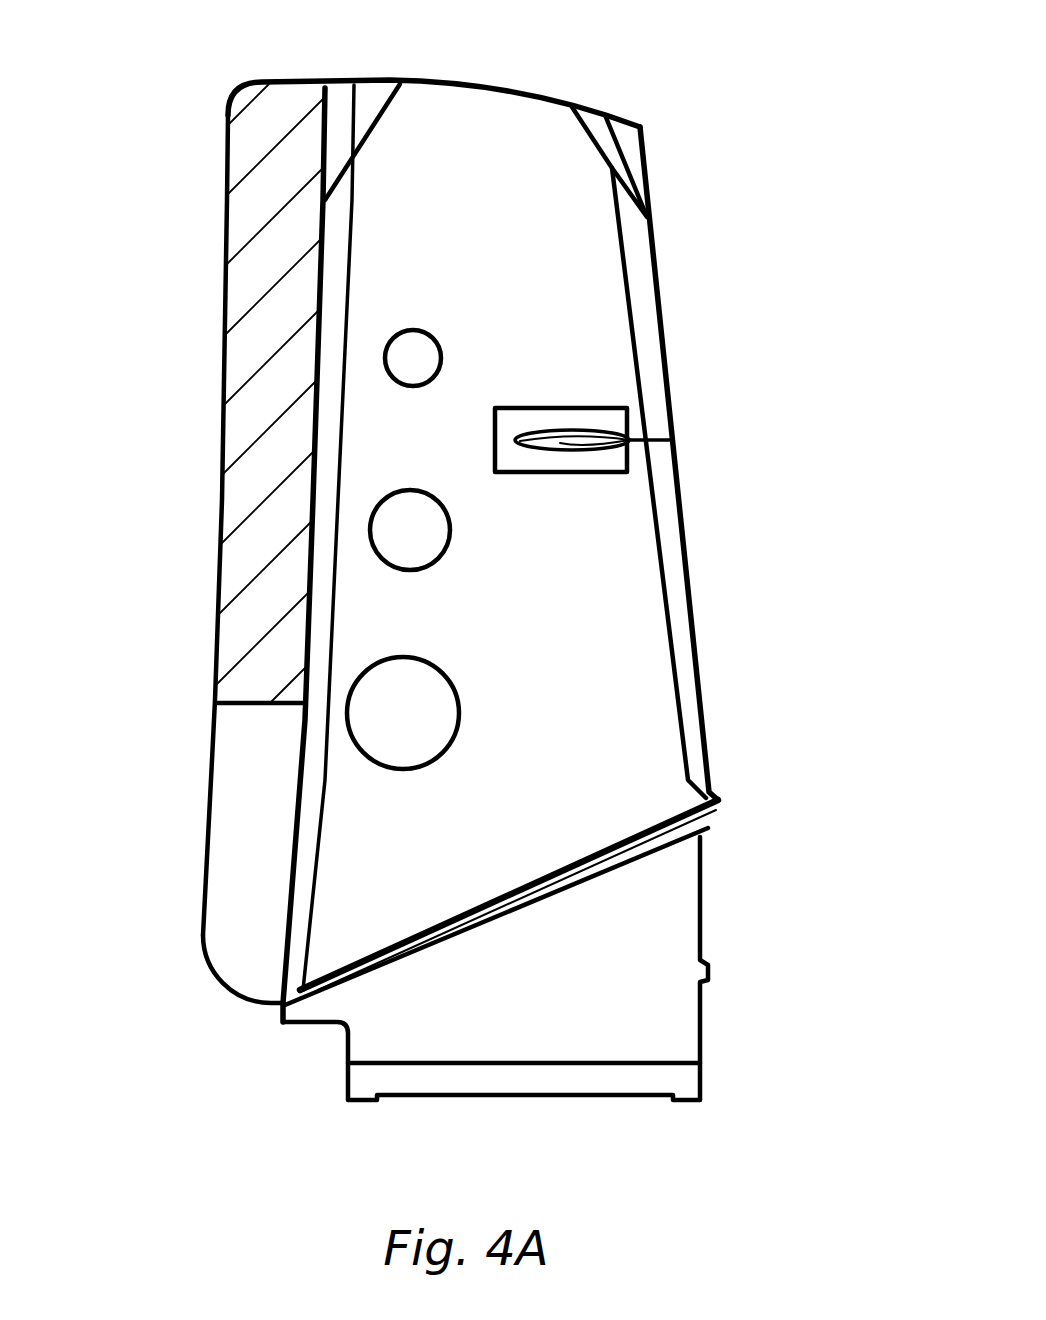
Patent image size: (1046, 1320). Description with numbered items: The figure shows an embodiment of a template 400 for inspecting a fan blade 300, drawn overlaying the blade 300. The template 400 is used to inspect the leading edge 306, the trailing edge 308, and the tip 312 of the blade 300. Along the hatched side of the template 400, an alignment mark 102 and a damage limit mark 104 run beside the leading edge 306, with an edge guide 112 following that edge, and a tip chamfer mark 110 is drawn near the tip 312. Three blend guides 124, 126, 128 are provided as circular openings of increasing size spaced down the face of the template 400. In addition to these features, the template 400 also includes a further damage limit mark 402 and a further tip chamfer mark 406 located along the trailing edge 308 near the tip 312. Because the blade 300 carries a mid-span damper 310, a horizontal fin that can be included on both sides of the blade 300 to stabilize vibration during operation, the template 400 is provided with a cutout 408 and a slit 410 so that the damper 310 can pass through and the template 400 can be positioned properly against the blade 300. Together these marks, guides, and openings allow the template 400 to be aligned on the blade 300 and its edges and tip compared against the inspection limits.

The alignment mark 102 is at (324, 97).
The damage limit mark 104 is at (352, 100).
The tip chamfer mark 110 is at (390, 82).
The edge guide 112 is at (235, 228).
The blend guide 124 is at (380, 340).
The blend guide 126 is at (365, 512).
The blend guide 128 is at (348, 668).
The fan blade 300 is at (543, 92).
The leading edge 306 is at (243, 998).
The trailing edge 308 is at (660, 298).
The mid-span damper 310 is at (632, 437).
The tip 312 is at (487, 84).
The template 400 is at (210, 743).
The damage limit mark 402 is at (610, 140).
The tip chamfer mark 406 is at (648, 185).
The cutout 408 is at (620, 408).
The slit 410 is at (655, 441).